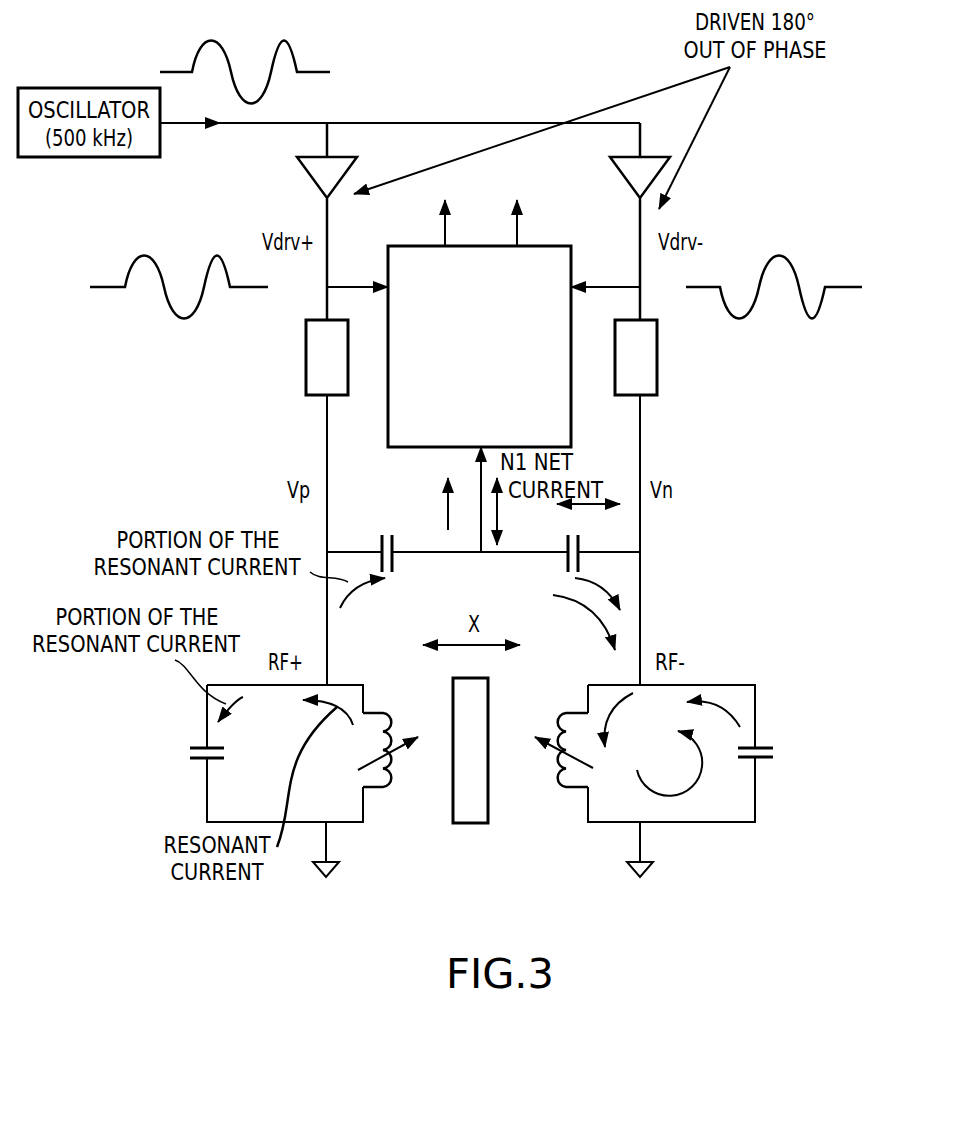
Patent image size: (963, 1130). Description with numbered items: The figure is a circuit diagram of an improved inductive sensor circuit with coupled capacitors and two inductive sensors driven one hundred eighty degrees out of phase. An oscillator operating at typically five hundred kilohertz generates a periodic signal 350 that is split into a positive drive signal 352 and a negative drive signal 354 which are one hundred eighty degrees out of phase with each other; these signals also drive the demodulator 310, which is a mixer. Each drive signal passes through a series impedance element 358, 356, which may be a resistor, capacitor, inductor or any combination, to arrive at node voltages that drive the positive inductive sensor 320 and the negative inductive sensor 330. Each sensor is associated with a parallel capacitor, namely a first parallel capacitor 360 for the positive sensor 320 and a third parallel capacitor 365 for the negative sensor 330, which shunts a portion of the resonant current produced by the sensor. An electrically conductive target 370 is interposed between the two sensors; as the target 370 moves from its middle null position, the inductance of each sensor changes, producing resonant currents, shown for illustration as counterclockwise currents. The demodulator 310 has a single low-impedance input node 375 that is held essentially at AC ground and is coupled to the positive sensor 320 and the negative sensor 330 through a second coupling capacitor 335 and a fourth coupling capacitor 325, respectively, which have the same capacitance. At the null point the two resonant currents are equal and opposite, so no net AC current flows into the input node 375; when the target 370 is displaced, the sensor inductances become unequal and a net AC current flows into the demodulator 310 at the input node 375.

The demodulator 310 is at (573, 275).
The inductive sensor Lsns+ 320 is at (396, 793).
The capacitor Cp4 325 is at (580, 550).
The inductive sensor Lsns− 330 is at (563, 790).
The capacitor Cp2 335 is at (381, 549).
The periodic signal 350 is at (451, 123).
The drive signal Vdrv+ 352 is at (303, 172).
The drive signal Vdrv− 354 is at (661, 157).
The series impedance Zs (negative side) 356 is at (659, 336).
The series impedance Zs (positive side) 358 is at (307, 395).
The capacitor Cp1 360 is at (203, 775).
The capacitor Cp3 365 is at (768, 735).
The electrically conductive target 370 is at (492, 773).
The node N1 375 is at (501, 428).